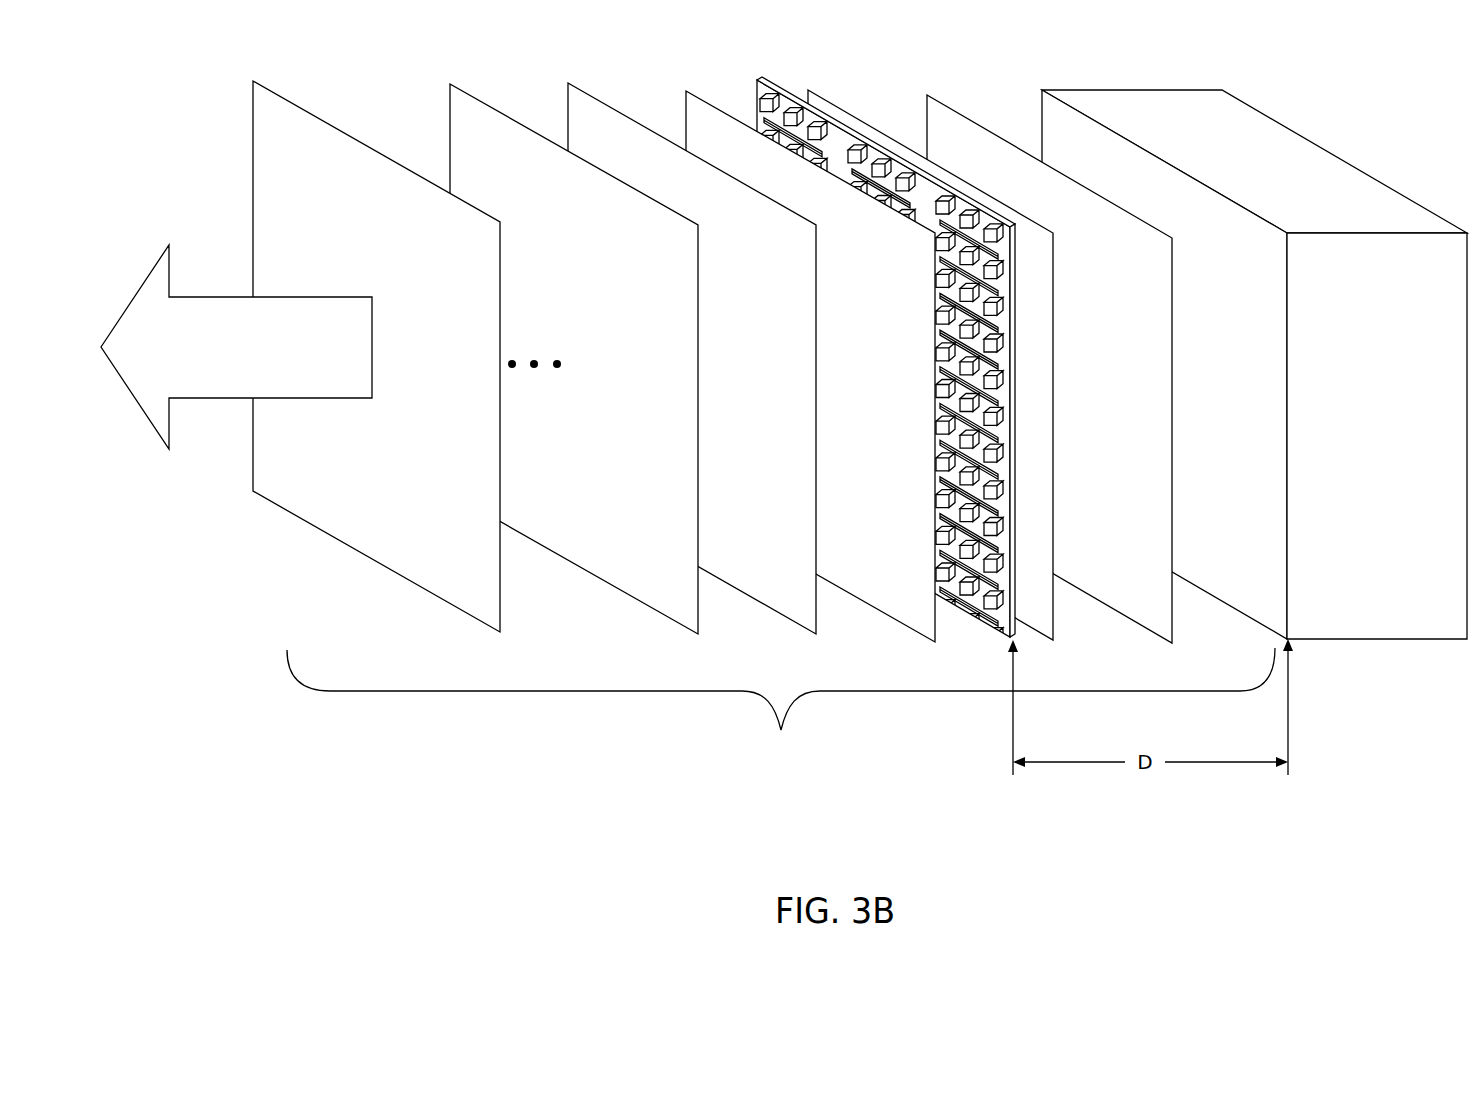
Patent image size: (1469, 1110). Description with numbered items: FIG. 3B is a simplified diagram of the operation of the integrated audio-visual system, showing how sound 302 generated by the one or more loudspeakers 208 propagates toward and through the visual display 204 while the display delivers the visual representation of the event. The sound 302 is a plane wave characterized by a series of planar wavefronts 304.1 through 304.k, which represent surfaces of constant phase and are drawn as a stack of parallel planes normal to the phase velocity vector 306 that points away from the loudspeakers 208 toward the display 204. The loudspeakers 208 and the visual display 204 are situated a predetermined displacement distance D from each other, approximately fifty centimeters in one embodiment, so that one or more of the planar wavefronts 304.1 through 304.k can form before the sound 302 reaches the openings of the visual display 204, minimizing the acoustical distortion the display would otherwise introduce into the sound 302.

The visual display 204 is at (762, 79).
The loudspeakers 208 is at (1252, 126).
The sound 302 is at (781, 706).
The planar wavefront 304.1 is at (983, 127).
The planar wavefront 304.k is at (343, 132).
The phase velocity vector 306 is at (236, 347).